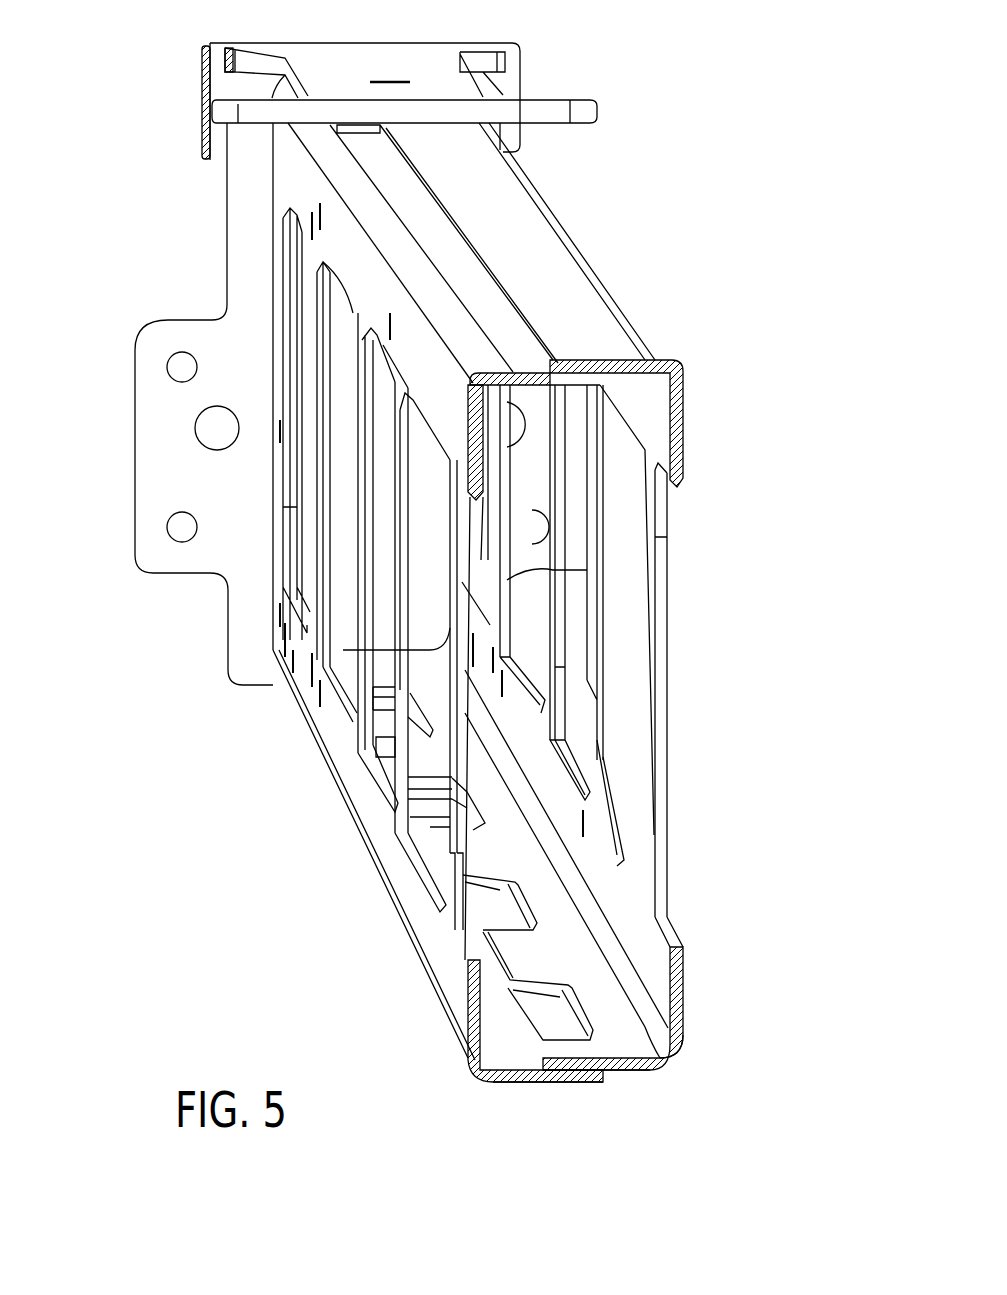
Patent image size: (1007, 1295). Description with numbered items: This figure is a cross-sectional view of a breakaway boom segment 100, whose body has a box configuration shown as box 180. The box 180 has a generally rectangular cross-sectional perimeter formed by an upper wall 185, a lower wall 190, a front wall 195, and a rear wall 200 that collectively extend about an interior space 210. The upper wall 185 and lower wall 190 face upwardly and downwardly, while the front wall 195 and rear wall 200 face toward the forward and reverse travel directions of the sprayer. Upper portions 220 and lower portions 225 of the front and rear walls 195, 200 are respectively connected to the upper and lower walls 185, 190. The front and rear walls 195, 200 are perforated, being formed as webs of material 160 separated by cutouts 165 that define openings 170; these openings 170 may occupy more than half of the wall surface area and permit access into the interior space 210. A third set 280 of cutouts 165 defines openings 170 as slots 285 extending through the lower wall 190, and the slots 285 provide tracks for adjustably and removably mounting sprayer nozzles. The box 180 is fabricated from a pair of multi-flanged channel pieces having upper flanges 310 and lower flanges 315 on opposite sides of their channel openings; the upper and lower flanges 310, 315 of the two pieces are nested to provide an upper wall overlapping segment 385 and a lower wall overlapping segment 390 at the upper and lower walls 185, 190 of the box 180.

The breakaway boom segment 100 is at (150, 203).
The webs of material 160 is at (660, 745).
The cutouts 165 is at (630, 835).
The openings 170 is at (627, 623).
The box 180 is at (683, 1095).
The upper wall 185 is at (673, 300).
The lower wall 190 is at (534, 1090).
The front wall 195 is at (303, 760).
The rear wall 200 is at (682, 703).
The interior space 210 is at (620, 907).
The upper portions 220 is at (368, 283).
The lower portions 225 is at (405, 882).
The third set of cutouts 280 is at (584, 995).
The slots 285 is at (550, 1032).
The upper flanges 310 is at (516, 382).
The lower flanges 315 is at (628, 1072).
The upper wall overlapping segment 385 is at (580, 295).
The lower wall overlapping segment 390 is at (576, 1090).